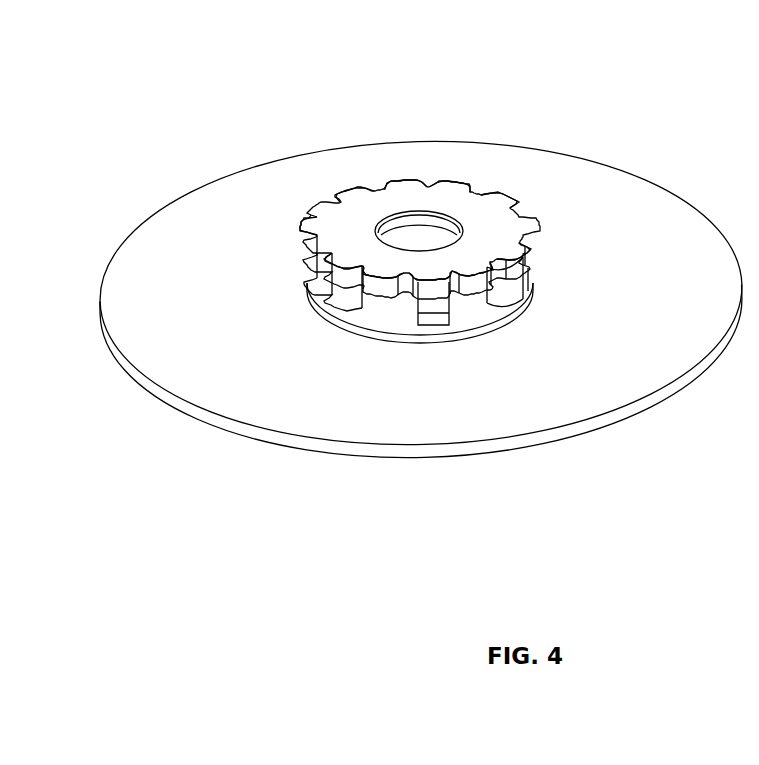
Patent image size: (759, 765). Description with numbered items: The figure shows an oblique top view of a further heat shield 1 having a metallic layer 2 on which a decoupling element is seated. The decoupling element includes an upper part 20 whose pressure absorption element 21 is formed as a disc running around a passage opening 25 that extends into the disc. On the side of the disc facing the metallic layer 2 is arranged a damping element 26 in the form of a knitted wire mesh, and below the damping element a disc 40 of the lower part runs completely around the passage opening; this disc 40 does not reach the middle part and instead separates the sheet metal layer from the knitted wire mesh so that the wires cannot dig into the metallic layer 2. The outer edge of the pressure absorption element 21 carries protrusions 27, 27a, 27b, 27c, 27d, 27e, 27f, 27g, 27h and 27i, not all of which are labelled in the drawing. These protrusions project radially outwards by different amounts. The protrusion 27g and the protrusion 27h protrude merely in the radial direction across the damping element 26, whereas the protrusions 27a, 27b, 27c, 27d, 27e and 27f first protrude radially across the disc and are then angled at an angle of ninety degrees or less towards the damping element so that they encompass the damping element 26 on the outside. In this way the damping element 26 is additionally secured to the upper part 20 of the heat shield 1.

The heat shield 1 is at (255, 463).
The metallic layer 2 is at (693, 238).
The upper part 20 is at (383, 207).
The pressure absorption element 21 is at (347, 232).
The passage opening 25 is at (434, 244).
The damping element 26 is at (497, 310).
The protrusion 27 is at (458, 190).
The protrusion 27a is at (302, 235).
The protrusion 27b is at (320, 278).
The protrusion 27c is at (437, 303).
The protrusion 27d is at (530, 268).
The protrusion 27e is at (512, 200).
The protrusion 27f is at (400, 182).
The protrusion 27g is at (373, 290).
The protrusion 27h is at (480, 280).
The tooth 27i is at (352, 193).
The disc 40 is at (350, 328).